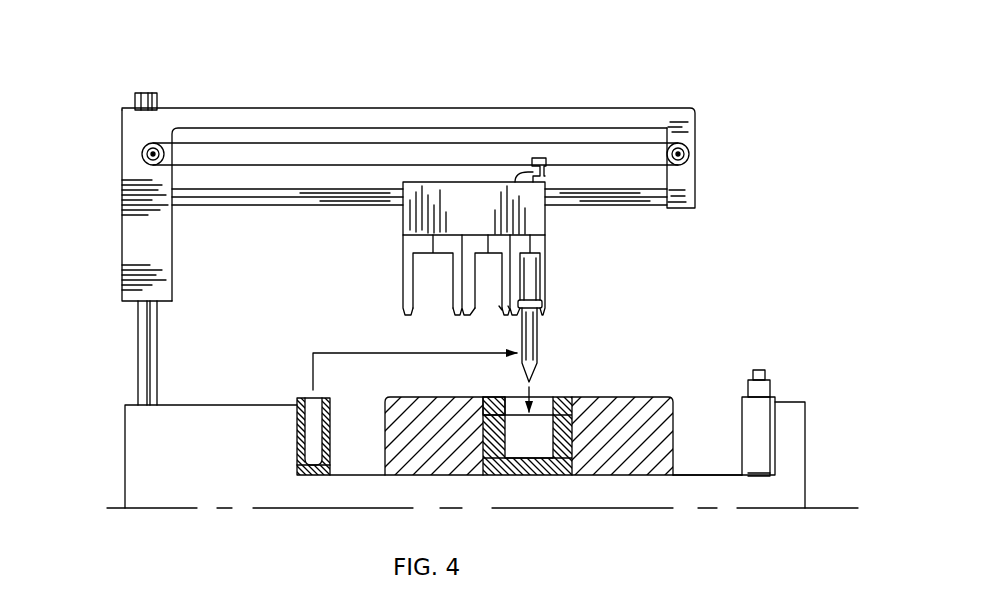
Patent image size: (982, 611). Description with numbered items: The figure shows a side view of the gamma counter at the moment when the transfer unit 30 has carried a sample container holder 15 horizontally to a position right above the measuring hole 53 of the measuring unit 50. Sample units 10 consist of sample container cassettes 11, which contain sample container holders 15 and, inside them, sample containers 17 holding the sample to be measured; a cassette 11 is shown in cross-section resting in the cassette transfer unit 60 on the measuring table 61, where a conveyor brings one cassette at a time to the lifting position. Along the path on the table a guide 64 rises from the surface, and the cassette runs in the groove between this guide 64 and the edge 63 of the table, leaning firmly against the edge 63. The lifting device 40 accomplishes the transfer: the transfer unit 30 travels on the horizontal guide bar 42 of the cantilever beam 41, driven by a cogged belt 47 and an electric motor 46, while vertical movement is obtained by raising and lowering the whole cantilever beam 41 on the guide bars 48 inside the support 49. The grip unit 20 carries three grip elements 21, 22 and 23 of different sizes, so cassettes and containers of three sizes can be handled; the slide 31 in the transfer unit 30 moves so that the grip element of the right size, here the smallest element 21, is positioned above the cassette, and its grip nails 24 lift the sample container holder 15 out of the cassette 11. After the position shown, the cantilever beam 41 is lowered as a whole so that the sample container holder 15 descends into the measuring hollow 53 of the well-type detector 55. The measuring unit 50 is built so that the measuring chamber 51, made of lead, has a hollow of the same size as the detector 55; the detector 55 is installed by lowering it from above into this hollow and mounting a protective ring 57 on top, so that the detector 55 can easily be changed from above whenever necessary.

The sample unit 10 is at (740, 362).
The sample container cassette 11 is at (332, 423).
The sample container holder 15 is at (539, 337).
The sample container 17 is at (543, 308).
The grip unit 20 is at (385, 275).
The grip element 21 is at (545, 290).
The grip element 22 is at (493, 318).
The grip element 23 is at (432, 318).
The grip nails 24 is at (403, 317).
The transfer unit 30 is at (377, 224).
The slide 31 is at (530, 216).
The lifting device 40 is at (487, 93).
The cantilever beam 41 is at (337, 117).
The horizontal guide bar 42 is at (628, 195).
The electric motor 46 is at (143, 157).
The cogged belt 47 is at (612, 140).
The guide bars 48 is at (143, 346).
The support 49 is at (130, 248).
The measuring unit 50 is at (612, 372).
The measuring chamber 51 is at (652, 400).
The measuring hole 53 is at (542, 405).
The well-type detector 55 is at (572, 476).
The protective ring 57 is at (492, 396).
The cassette transfer unit 60 is at (737, 490).
The measuring table 61 is at (722, 473).
The edge of the table 63 is at (297, 443).
The guide 64 is at (313, 477).